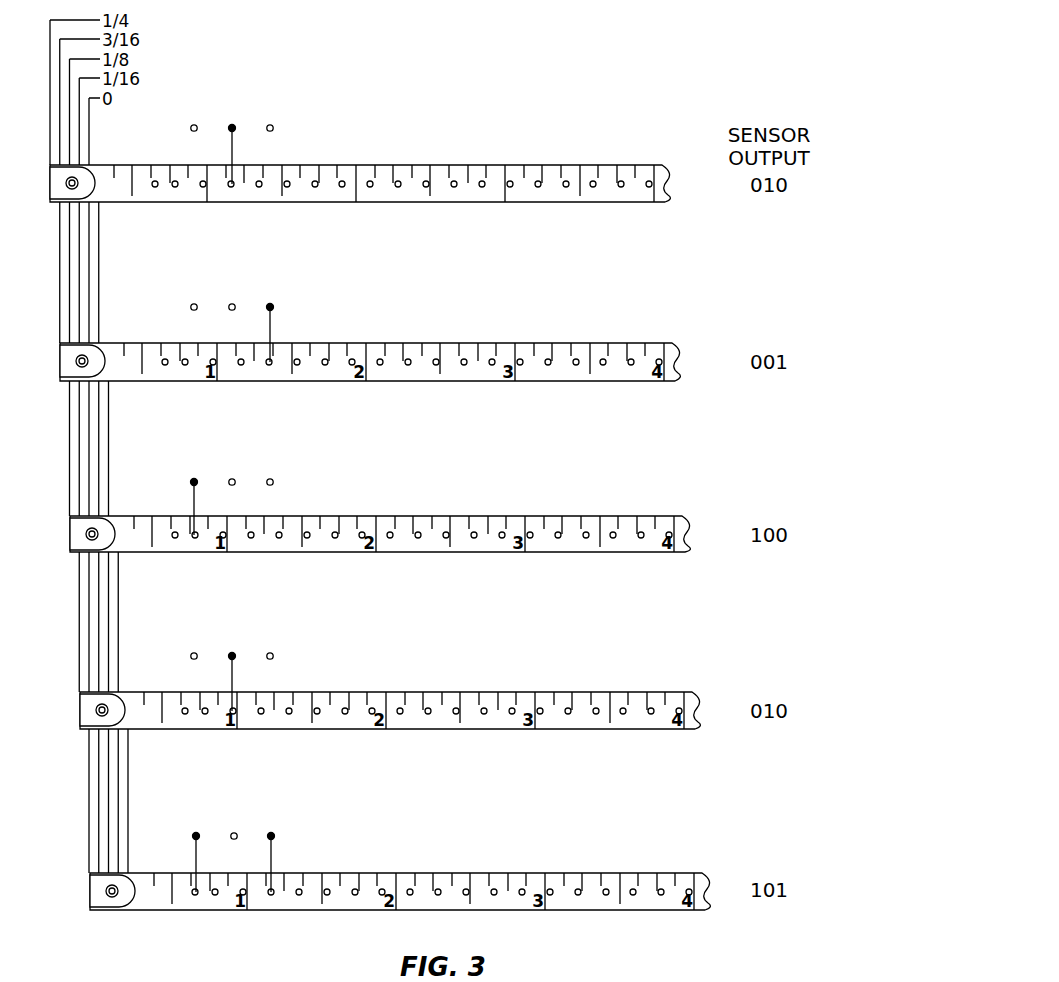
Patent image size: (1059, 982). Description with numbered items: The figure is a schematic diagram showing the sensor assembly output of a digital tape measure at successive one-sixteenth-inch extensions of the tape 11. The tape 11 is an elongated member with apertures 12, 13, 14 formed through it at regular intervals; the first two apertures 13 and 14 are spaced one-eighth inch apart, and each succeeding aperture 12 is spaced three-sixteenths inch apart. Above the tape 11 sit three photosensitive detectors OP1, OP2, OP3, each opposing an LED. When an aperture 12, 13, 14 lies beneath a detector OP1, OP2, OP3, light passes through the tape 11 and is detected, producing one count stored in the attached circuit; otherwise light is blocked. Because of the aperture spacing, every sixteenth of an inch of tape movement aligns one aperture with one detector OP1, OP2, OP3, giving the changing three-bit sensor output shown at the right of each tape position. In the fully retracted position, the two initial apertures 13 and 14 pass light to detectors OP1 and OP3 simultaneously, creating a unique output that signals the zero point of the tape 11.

The tape 11 is at (360, 159).
The apertures 12 is at (594, 181).
The first aperture 13 is at (194, 897).
The second aperture 14 is at (217, 897).
The photosensitive detector OP1 is at (195, 833).
The photosensitive detector OP2 is at (233, 832).
The photosensitive detector OP3 is at (272, 832).